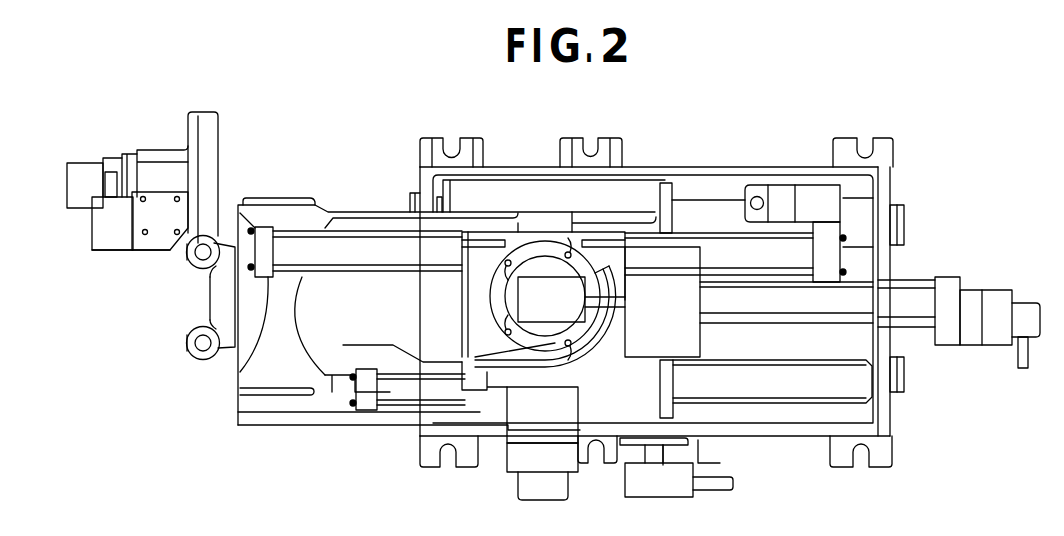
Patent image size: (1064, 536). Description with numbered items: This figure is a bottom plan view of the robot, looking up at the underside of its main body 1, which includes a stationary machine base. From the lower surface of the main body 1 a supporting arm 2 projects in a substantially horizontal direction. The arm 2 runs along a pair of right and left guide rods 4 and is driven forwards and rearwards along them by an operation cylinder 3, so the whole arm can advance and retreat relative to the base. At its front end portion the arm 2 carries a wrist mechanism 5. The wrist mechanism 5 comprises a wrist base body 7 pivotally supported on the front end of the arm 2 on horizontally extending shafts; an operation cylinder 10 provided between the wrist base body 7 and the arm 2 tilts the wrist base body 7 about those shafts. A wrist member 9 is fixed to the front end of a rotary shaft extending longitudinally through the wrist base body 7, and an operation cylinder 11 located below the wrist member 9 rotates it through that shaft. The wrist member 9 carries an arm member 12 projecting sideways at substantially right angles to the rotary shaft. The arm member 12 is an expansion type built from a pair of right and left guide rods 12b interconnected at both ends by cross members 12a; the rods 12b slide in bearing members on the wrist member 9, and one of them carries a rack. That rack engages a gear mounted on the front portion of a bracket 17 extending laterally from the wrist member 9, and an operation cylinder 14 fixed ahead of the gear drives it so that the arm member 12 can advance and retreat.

The main body 1 is at (695, 167).
The supporting arm 2 is at (350, 213).
The operation cylinder 3 is at (910, 302).
The guide rods 4 is at (727, 207).
The wrist mechanism 5 is at (292, 186).
The wrist base body 7 is at (343, 333).
The wrist member 9 is at (225, 165).
The operation cylinder 10 is at (400, 390).
The operation cylinder 11 is at (383, 243).
The arm member 12 is at (174, 337).
The cross members 12a is at (218, 293).
The guide rods 12b is at (213, 236).
The operation cylinder 14 is at (153, 238).
The bracket 17 is at (210, 135).